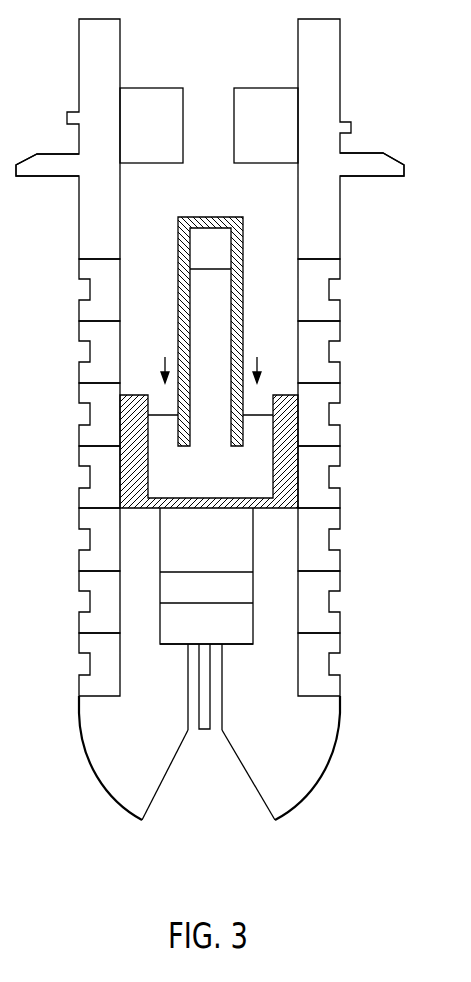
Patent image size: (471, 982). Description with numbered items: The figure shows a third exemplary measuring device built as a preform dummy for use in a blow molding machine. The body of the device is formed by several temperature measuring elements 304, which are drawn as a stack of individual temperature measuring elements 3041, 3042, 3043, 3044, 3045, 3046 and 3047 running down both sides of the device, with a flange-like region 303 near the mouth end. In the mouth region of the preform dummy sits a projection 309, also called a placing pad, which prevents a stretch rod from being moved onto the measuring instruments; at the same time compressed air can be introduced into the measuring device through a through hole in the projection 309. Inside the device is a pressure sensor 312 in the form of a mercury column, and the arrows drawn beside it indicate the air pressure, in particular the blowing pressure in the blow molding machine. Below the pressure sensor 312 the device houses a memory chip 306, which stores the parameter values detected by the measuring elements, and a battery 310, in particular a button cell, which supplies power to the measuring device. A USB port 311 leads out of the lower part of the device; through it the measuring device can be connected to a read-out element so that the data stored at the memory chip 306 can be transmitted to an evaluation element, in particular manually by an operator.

The mounting flange 303 is at (398, 153).
The temperature measuring elements 304 is at (333, 62).
The temperature measuring element 3041 is at (255, 290).
The temperature measuring element 3042 is at (255, 352).
The temperature measuring element 3043 is at (255, 414).
The temperature measuring element 3044 is at (255, 476).
The temperature measuring element 3045 is at (255, 539).
The temperature measuring element 3046 is at (255, 601).
The temperature measuring element 3047 is at (255, 663).
The memory chip 306 is at (223, 599).
The projection 309 is at (244, 78).
The battery 310 is at (223, 637).
The USB port 311 is at (208, 712).
The pressure sensor 312 is at (248, 213).